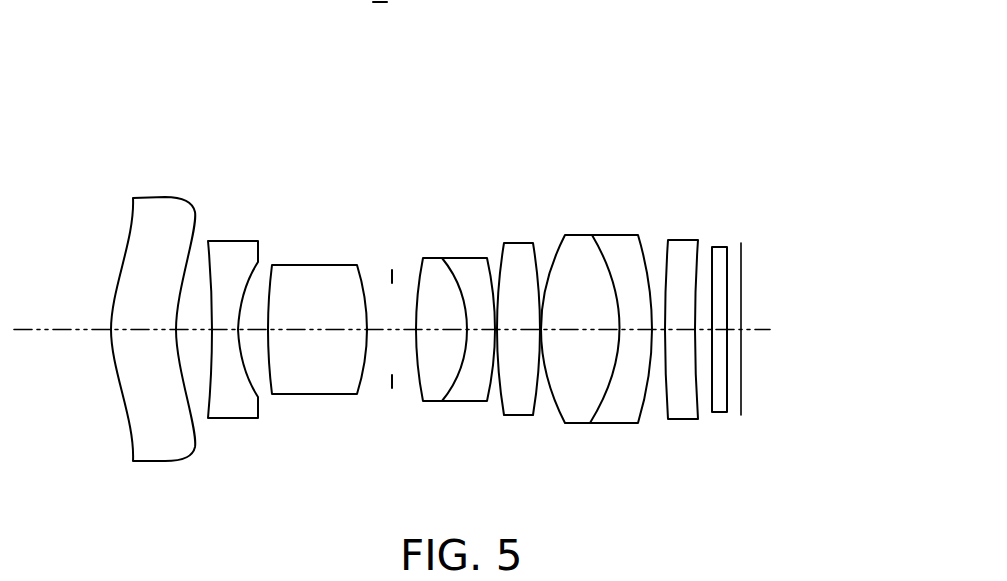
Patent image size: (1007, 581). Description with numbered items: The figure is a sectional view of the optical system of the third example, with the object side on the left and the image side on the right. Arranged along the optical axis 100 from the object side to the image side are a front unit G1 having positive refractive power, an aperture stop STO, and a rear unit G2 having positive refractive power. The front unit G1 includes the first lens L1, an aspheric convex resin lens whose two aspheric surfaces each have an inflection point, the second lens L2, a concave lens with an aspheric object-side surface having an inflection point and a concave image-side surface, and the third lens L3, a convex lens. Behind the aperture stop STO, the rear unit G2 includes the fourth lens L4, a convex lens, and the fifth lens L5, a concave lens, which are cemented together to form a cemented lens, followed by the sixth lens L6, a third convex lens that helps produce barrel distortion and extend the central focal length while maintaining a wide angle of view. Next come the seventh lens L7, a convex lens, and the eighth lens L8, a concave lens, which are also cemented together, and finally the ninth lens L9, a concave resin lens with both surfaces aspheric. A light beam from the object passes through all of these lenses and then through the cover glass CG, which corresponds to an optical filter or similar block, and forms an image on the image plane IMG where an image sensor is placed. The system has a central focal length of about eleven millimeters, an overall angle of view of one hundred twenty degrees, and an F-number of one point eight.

The front unit G1 is at (342, 90).
The rear unit G2 is at (775, 90).
The first lens L1 is at (158, 217).
The second lens L2 is at (235, 245).
The third lens L3 is at (310, 265).
The fourth lens L4 is at (429, 262).
The fifth lens L5 is at (468, 265).
The sixth lens L6 is at (522, 247).
The seventh lens L7 is at (575, 238).
The eighth lens L8 is at (609, 235).
The ninth lens L9 is at (684, 242).
The aperture stop STO is at (392, 386).
The cover glass CG is at (769, 355).
The image plane IMG is at (793, 309).
The optical axis 100 is at (434, 298).